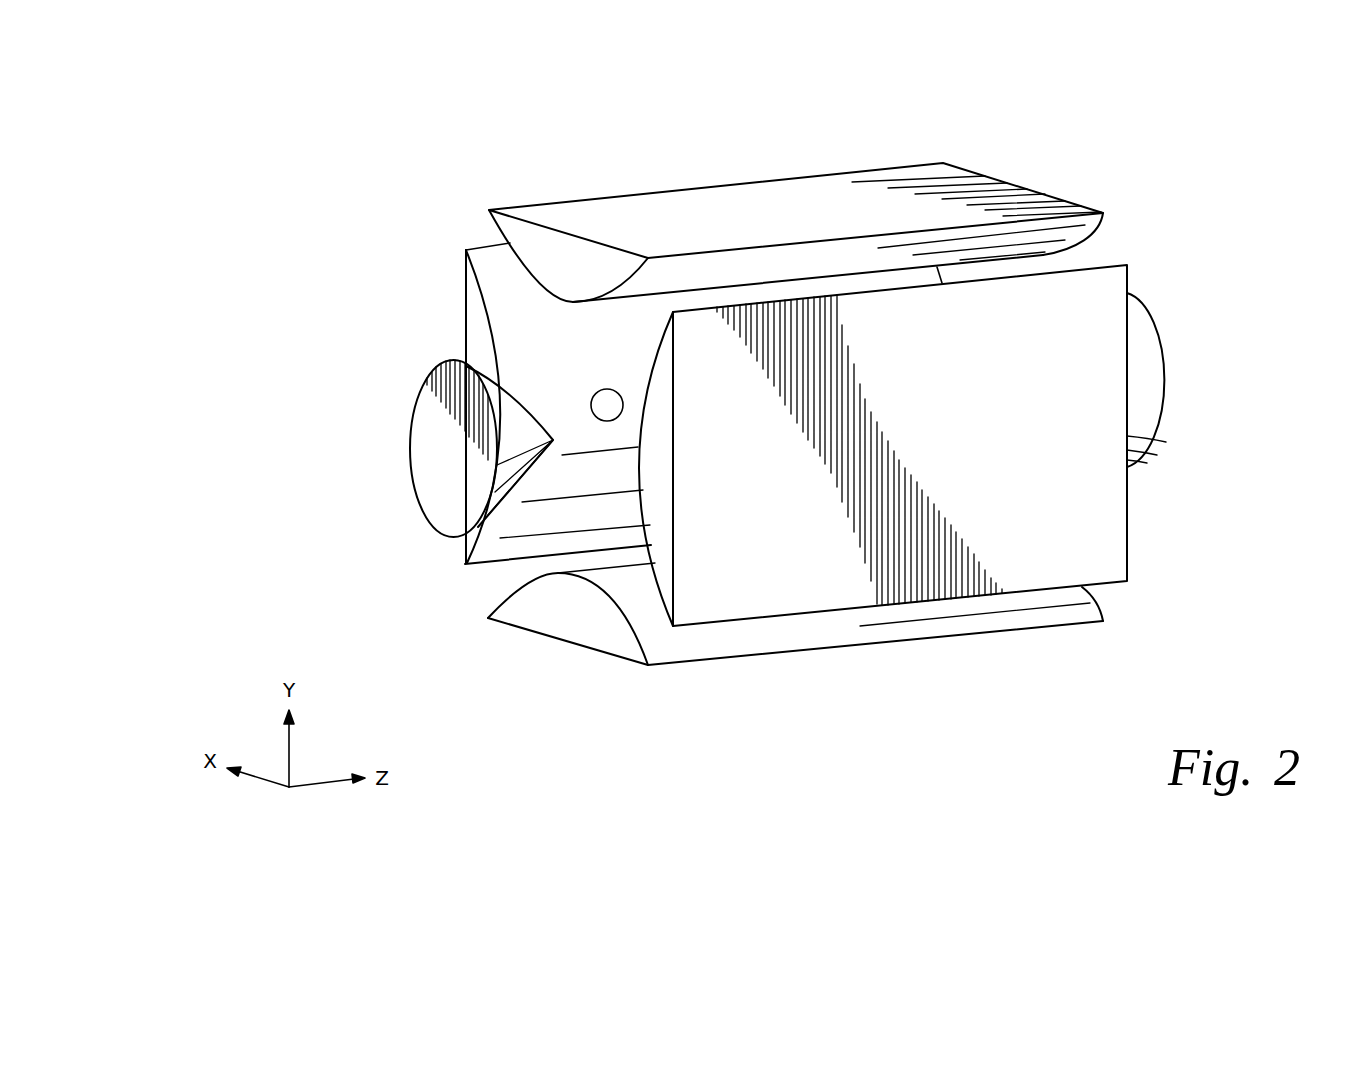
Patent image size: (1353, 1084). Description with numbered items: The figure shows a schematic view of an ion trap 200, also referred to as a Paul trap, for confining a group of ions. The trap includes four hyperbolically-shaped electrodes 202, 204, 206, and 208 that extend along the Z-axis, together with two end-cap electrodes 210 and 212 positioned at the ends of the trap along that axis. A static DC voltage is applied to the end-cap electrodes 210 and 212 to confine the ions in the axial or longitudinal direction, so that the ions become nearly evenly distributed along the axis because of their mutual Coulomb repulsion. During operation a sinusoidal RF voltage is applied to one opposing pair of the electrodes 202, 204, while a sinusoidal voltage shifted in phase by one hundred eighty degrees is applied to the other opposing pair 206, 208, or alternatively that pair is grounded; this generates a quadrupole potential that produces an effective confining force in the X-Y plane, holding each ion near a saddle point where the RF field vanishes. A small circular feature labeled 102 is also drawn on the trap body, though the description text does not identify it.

The ion trap 200 is at (807, 385).
The hyperbolically-shaped electrode 202 is at (1120, 532).
The hyperbolically-shaped electrode 204 is at (473, 315).
The hyperbolically-shaped electrode 206 is at (828, 640).
The hyperbolically-shaped electrode 208 is at (746, 188).
The end-cap electrode 210 is at (417, 423).
The end-cap electrode 212 is at (1168, 362).
The aperture 102 is at (606, 394).